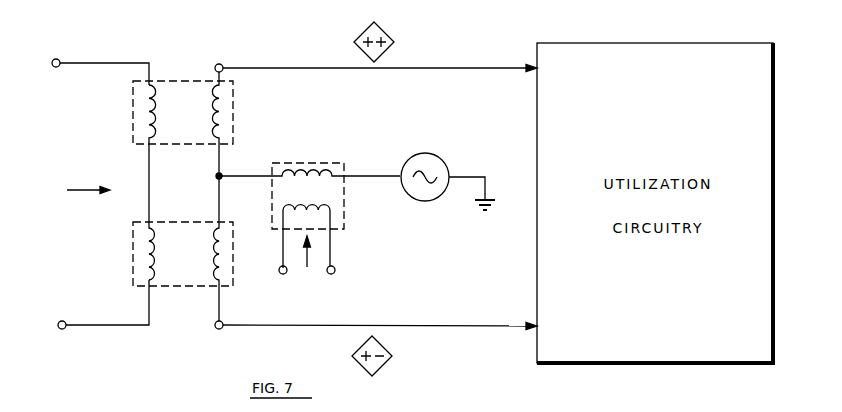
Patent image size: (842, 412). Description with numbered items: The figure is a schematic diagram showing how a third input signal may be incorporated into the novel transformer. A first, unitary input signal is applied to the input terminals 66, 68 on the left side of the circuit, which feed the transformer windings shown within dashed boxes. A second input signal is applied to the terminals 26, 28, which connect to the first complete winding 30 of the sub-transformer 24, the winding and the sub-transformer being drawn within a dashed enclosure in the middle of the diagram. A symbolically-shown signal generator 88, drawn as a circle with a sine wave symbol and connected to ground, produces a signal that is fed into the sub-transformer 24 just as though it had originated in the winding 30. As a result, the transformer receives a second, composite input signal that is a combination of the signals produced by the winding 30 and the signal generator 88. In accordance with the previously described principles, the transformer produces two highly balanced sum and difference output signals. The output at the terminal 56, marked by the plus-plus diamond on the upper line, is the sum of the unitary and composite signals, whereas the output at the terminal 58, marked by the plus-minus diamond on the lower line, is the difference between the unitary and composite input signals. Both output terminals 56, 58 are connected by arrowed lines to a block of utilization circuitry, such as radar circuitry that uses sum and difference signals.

The terminal 66 is at (53, 60).
The terminal 68 is at (65, 329).
The terminal 56 is at (222, 64).
The terminal 58 is at (222, 329).
The sub-transformer 24 is at (290, 160).
The first complete winding 30 is at (282, 209).
The terminal 26 is at (285, 274).
The terminal 28 is at (334, 273).
The signal generator 88 is at (423, 155).